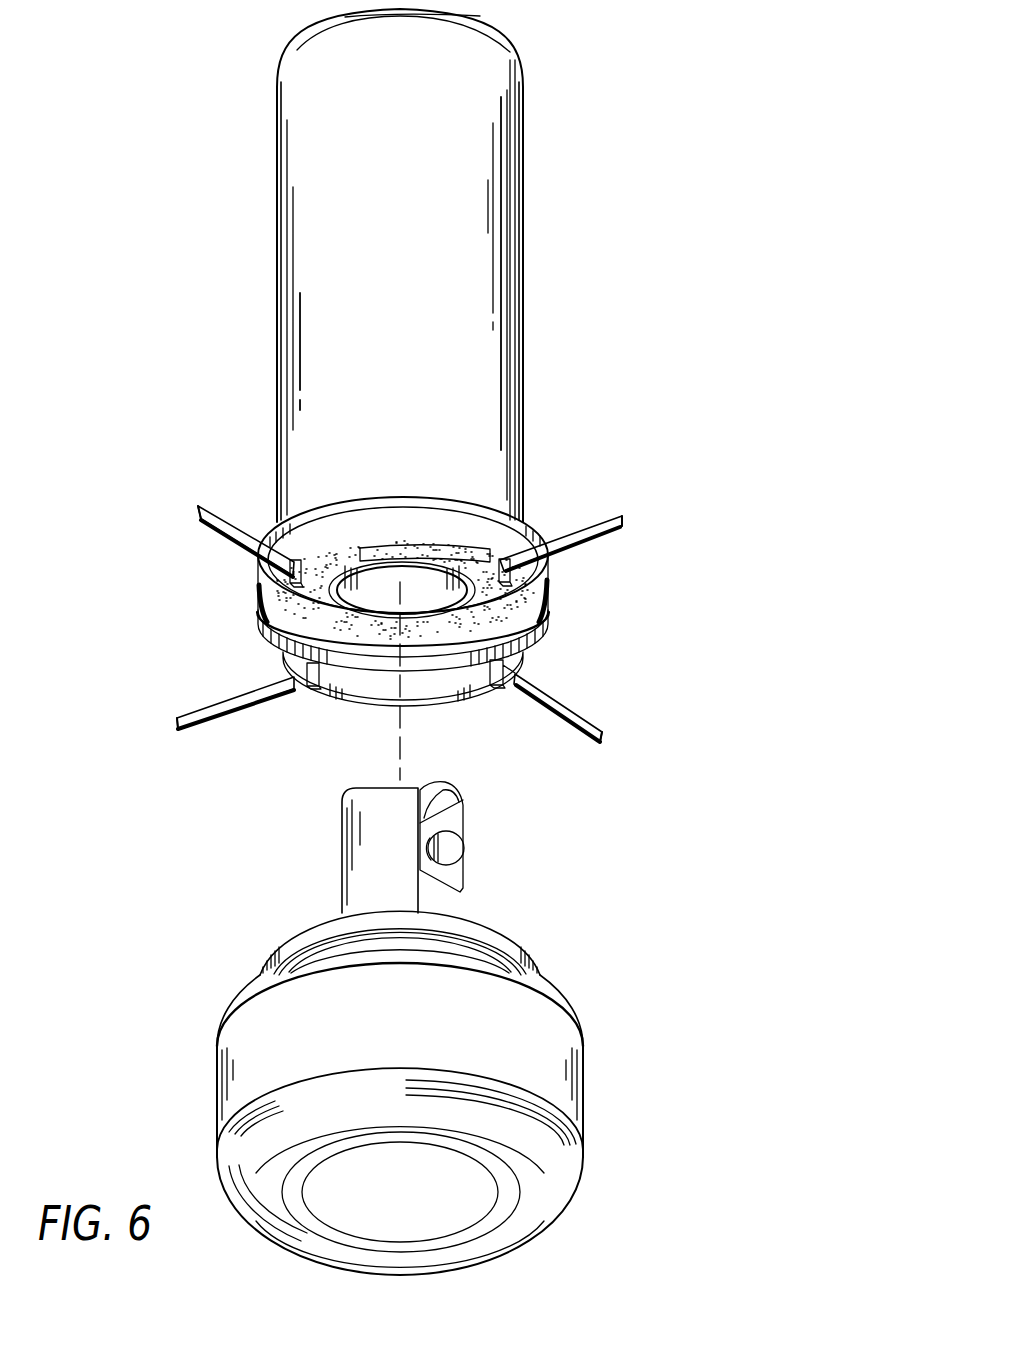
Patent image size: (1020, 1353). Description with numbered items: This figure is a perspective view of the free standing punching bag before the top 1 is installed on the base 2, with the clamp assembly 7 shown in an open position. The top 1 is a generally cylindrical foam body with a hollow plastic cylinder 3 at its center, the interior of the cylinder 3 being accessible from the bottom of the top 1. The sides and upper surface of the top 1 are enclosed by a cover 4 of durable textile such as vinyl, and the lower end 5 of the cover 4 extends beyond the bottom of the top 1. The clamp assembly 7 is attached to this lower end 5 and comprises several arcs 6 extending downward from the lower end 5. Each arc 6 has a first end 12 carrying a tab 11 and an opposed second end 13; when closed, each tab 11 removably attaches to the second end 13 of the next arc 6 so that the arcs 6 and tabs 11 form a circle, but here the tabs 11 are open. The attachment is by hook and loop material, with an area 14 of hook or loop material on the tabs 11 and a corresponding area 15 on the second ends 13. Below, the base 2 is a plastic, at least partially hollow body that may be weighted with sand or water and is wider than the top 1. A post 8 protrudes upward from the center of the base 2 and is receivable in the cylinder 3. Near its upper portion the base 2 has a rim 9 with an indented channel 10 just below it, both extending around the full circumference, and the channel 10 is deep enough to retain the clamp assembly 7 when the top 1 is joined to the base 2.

The top 1 is at (462, 642).
The base 2 is at (540, 1062).
The hollow cylinder 3 is at (412, 600).
The cover 4 is at (478, 285).
The lower end 5 is at (453, 525).
The arc 6 is at (343, 553).
The clamp assembly 7 is at (236, 632).
The post 8 is at (347, 863).
The rim 9 is at (517, 946).
The channel 10 is at (457, 945).
The tab 11 is at (595, 525).
The first end 12 is at (300, 556).
The second end 13 is at (198, 518).
The area of hook or loop material 14 is at (563, 538).
The area of hook or loop material 15 is at (403, 547).